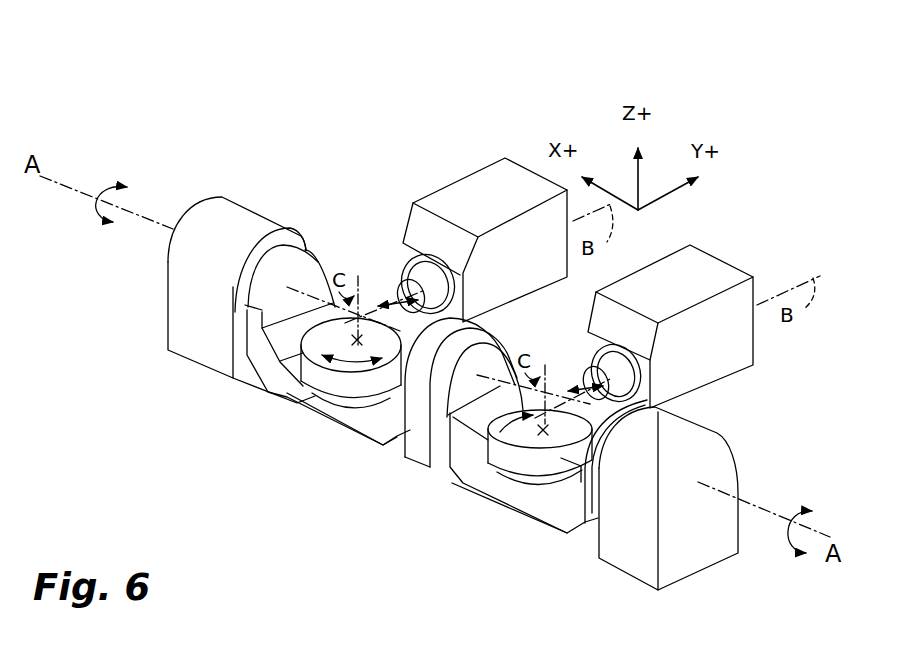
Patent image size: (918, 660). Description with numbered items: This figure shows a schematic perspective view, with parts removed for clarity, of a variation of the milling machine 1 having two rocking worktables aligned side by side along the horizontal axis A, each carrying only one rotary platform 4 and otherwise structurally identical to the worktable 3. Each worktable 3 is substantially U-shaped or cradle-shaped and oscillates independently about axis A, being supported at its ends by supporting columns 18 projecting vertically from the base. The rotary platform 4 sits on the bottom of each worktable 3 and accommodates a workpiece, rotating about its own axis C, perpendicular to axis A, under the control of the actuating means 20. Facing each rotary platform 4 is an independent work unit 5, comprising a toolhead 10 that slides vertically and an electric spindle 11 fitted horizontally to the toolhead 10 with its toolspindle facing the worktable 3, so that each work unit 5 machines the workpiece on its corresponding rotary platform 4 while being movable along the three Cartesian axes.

The milling machine 1 is at (720, 129).
The rocking worktable 3 is at (350, 453).
The rotary platform 4 is at (320, 382).
The work unit 5 is at (377, 213).
The toolhead 10 is at (478, 192).
The electric spindle 11 is at (388, 272).
The supporting column 18 is at (193, 345).
The actuating means for operating rotary platforms 20 is at (318, 406).